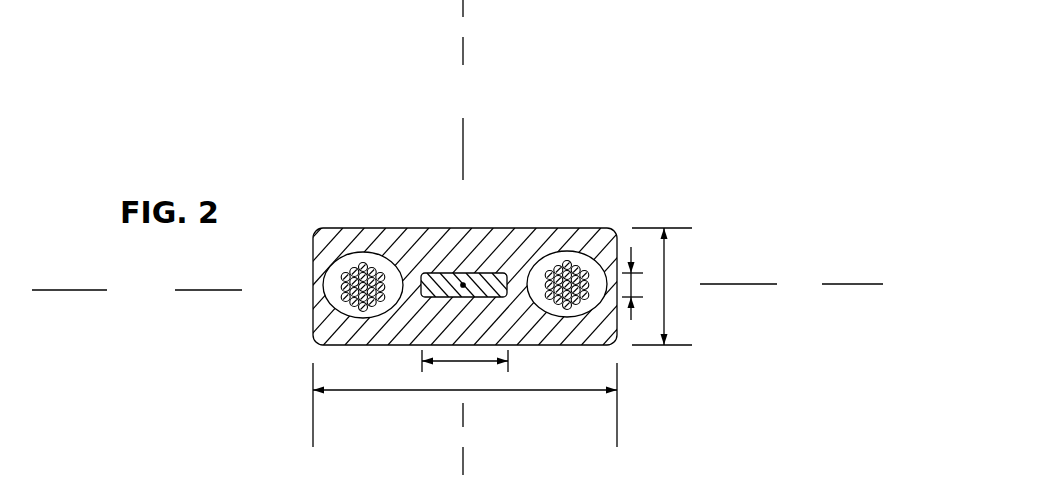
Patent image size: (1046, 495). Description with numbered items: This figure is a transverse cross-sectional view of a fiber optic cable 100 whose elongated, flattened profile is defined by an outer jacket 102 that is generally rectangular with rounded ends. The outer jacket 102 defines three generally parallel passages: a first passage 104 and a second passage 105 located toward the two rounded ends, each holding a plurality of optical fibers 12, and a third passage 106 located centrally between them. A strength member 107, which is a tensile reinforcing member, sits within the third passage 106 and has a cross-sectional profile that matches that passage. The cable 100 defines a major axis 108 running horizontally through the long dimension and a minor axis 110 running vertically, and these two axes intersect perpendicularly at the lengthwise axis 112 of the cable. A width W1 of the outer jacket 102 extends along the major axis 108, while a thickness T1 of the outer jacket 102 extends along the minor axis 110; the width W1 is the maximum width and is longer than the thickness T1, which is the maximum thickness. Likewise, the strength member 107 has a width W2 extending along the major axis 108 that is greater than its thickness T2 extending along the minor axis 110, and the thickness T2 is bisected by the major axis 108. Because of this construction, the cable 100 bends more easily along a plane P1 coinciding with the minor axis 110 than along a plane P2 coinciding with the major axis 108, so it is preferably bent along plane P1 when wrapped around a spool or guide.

The fiber optic cable 100 is at (701, 114).
The outer jacket 102 is at (385, 228).
The first passage 104 is at (350, 253).
The second passage 105 is at (573, 251).
The optical fibers 12 is at (347, 272).
The lengthwise axis 112 is at (459, 273).
The third passage 106 is at (463, 284).
The strength member 107 is at (485, 278).
The major axis 108 is at (82, 288).
The minor axis 110 is at (463, 48).
The plane P1 is at (463, 10).
The plane P2 is at (193, 290).
The thickness T1 is at (668, 286).
The thickness T2 is at (637, 283).
The width W1 is at (465, 405).
The width W2 is at (465, 370).